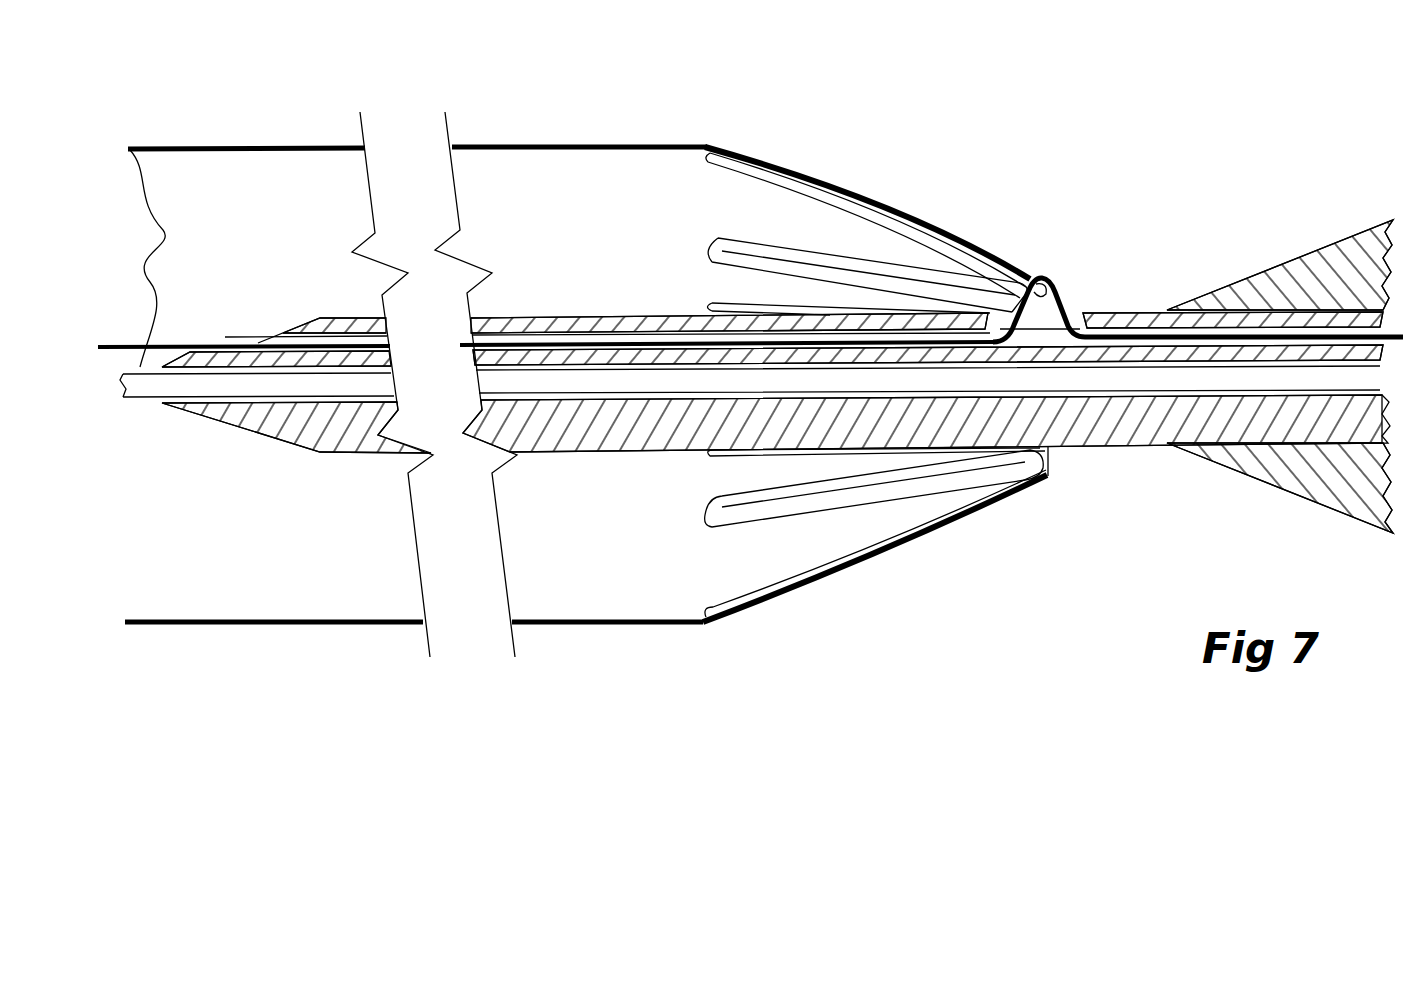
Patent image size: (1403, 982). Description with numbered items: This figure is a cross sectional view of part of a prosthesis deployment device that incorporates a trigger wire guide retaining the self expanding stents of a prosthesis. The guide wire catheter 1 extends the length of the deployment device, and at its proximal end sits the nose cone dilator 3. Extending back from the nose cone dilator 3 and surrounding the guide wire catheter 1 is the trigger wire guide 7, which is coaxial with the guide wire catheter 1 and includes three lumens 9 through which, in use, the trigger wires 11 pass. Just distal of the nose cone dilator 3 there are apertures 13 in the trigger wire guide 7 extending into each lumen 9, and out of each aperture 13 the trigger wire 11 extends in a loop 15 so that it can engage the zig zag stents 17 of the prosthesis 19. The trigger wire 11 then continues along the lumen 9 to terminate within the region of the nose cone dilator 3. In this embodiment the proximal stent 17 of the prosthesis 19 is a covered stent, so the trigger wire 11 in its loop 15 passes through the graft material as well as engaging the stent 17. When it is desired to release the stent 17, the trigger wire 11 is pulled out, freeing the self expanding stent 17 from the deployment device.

The guide wire catheter 1 is at (150, 387).
The nose cone dilator 3 is at (1270, 460).
The trigger wire guide 7 is at (1067, 423).
The lumen 9 is at (120, 343).
The trigger wire 11 is at (262, 340).
The aperture 13 is at (1067, 308).
The loop 15 is at (1063, 282).
The zig zag stent 17 is at (808, 193).
The prosthesis 19 is at (663, 203).